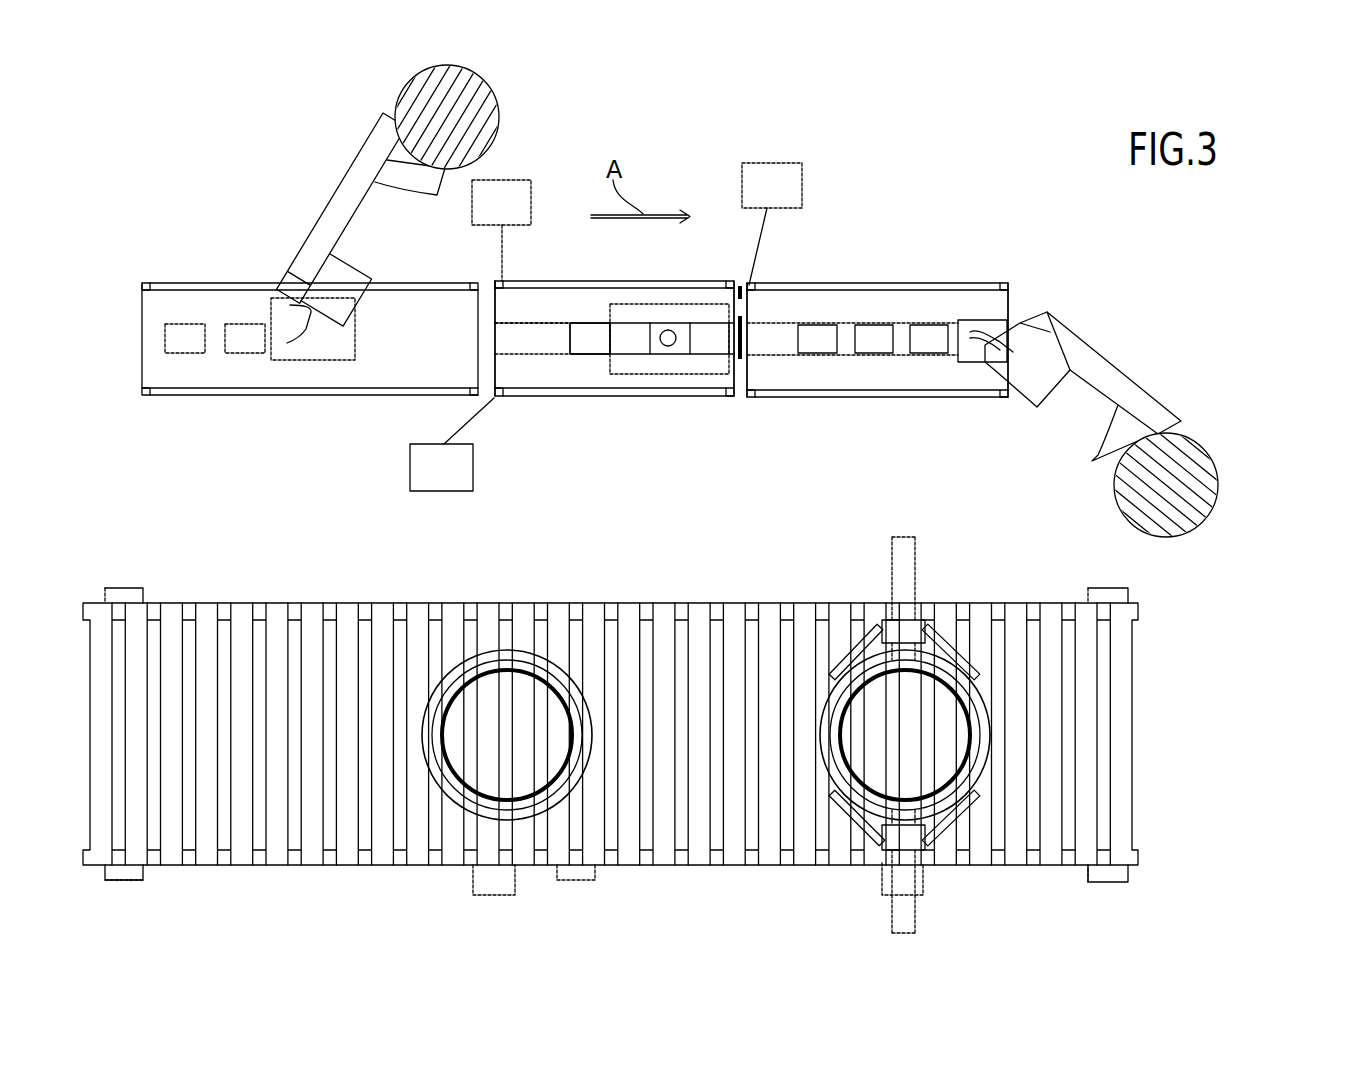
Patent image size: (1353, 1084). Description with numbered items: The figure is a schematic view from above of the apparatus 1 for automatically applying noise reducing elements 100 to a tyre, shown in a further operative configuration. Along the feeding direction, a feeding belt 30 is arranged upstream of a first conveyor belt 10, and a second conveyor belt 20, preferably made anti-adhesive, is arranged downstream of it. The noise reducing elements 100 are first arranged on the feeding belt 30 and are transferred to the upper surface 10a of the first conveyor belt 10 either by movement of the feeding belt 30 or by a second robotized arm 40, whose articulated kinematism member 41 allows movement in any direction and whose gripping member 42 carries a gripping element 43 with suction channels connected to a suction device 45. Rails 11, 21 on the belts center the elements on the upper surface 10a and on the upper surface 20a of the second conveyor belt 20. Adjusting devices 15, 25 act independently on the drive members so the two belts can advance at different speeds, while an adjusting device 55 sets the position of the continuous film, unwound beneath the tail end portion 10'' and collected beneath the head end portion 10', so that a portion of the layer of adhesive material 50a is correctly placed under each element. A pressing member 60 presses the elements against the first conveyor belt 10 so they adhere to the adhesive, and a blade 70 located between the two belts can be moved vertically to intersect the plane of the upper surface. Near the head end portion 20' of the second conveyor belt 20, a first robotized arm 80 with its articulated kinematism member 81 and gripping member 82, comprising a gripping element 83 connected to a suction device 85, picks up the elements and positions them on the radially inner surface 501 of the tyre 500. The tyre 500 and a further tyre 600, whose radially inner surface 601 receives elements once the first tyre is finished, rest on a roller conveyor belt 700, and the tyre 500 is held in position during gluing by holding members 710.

The apparatus 1 is at (1272, 242).
The first conveyor belt 10 is at (614, 378).
The head end portion 10' is at (718, 386).
The tail end portion 10'' is at (509, 391).
The upper surface 10a is at (566, 369).
The rail 11 is at (531, 370).
The adjusting device 15 is at (452, 485).
The second conveyor belt 20 is at (877, 379).
The head end portion 20' is at (1006, 387).
The upper surface 20a is at (812, 373).
The rail 21 is at (765, 372).
The adjusting device 25 is at (784, 200).
The feeding belt 30 is at (219, 392).
The second robotized arm 40 is at (320, 133).
The articulated kinematism member 41 is at (303, 205).
The gripping member 42 is at (360, 252).
The gripping element 43 is at (318, 352).
The suction device 45 is at (289, 333).
The layer of adhesive material 50a is at (520, 341).
The adjusting device 55 is at (512, 215).
The pressing member 60 is at (666, 388).
The blade 70 is at (739, 283).
The first robotized arm 80 is at (1195, 358).
The articulated kinematism member 81 is at (1107, 330).
The gripping member 82 is at (963, 377).
The gripping element 83 is at (967, 320).
The suction device 85 is at (1017, 320).
The noise reducing element 100 is at (234, 340).
The tyre 500 is at (960, 775).
The radially inner surface 501 is at (862, 750).
The further tyre 600 is at (563, 777).
The radially inner surface 601 is at (465, 750).
The roller conveyor belt 700 is at (248, 585).
The holding member 710 is at (950, 860).